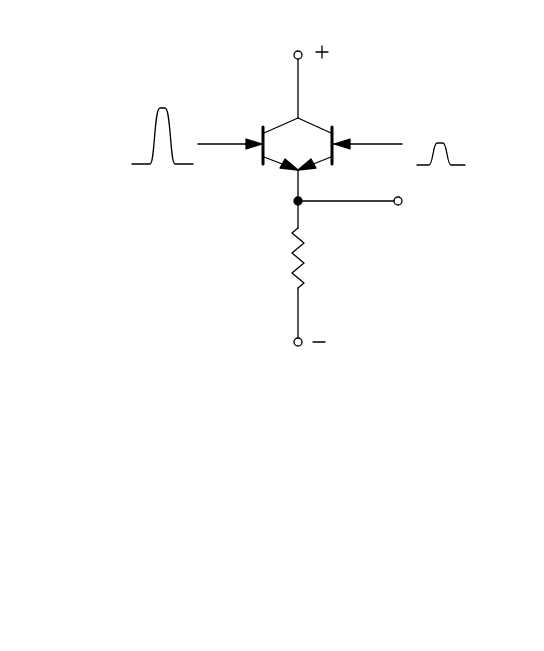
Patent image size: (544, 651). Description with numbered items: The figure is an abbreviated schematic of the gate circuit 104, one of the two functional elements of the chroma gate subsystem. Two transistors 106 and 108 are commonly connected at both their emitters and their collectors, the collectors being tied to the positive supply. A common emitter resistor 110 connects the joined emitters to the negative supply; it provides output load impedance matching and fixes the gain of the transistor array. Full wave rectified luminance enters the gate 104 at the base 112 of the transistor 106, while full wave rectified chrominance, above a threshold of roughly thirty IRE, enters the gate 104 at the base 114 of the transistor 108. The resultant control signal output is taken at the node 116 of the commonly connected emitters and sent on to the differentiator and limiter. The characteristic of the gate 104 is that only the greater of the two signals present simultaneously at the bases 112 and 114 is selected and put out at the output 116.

The gate circuit 104 is at (225, 265).
The transistor 106 is at (262, 157).
The transistor 108 is at (334, 132).
The common emitter resistor 110 is at (303, 271).
The base 112 is at (213, 143).
The base 114 is at (371, 146).
The node 116 is at (403, 197).